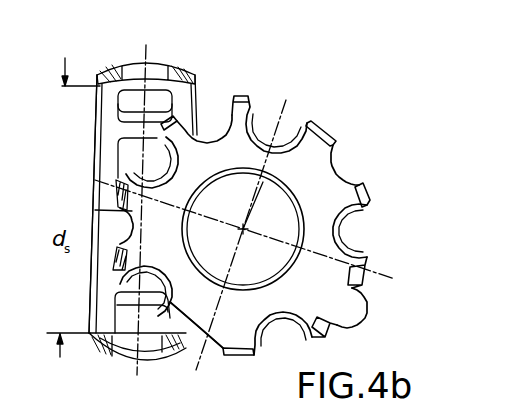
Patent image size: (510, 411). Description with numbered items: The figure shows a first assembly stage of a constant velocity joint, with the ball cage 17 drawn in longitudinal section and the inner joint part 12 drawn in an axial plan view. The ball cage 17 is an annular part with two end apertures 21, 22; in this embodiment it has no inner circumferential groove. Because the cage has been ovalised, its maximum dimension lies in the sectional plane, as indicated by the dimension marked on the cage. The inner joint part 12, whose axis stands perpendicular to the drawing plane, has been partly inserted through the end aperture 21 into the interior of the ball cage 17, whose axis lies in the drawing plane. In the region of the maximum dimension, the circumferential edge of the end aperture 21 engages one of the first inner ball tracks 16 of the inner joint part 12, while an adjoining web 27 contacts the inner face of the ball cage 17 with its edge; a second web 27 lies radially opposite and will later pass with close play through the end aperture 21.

The inner joint part 12 is at (292, 102).
The web 27 is at (324, 132).
The first inner ball track 16 is at (213, 348).
The ball cage 17 is at (190, 62).
The end aperture 21 is at (197, 100).
The end aperture 22 is at (93, 140).